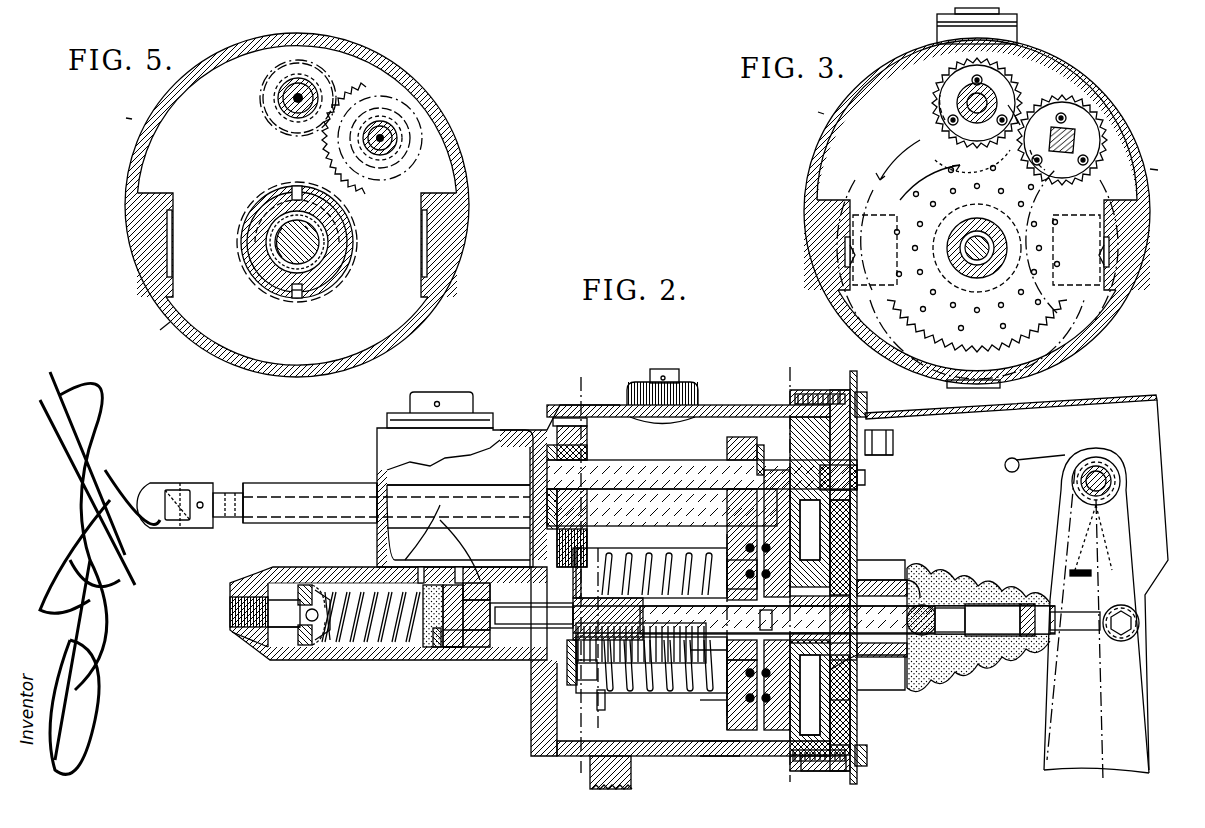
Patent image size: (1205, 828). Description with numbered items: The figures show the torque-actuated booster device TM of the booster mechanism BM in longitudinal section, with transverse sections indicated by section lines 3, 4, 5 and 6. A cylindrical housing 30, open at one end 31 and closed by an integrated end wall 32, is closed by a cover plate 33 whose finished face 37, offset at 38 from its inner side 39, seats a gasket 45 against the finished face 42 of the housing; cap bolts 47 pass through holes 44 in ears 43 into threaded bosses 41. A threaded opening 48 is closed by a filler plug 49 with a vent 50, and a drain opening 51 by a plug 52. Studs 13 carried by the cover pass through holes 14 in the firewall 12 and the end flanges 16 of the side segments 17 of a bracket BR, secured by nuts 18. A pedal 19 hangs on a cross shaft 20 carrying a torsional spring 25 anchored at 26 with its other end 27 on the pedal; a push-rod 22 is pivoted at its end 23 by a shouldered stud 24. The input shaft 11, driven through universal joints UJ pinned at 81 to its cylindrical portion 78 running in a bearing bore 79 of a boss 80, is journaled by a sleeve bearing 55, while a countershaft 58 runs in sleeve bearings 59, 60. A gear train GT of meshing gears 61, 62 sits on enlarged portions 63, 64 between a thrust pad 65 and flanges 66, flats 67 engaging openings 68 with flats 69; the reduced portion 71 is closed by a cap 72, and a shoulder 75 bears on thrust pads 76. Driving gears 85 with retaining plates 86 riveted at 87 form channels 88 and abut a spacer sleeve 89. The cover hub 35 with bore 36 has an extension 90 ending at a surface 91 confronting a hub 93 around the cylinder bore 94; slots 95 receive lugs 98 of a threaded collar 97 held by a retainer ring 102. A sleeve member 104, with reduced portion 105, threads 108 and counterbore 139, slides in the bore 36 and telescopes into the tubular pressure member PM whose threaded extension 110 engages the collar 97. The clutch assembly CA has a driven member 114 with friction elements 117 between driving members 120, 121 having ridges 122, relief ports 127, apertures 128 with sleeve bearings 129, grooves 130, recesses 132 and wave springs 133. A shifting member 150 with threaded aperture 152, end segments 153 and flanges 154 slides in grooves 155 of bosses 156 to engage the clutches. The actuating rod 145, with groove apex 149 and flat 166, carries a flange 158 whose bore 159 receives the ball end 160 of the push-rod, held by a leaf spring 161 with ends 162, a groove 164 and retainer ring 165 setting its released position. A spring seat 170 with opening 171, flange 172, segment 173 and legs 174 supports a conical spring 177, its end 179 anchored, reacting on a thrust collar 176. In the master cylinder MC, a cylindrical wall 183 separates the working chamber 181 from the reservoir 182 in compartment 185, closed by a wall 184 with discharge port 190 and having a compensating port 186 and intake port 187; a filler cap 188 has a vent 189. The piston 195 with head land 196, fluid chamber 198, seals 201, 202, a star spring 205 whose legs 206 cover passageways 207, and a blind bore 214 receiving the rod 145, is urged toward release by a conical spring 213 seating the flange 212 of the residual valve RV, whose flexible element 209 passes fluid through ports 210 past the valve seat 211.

In FIG. 2, the section line 3 is at (783, 373).
In FIG. 2, the section line 4- 4 is at (720, 539).
In FIG. 2, the section line 5 is at (574, 380).
In FIG. 2, the section line 6- 6 is at (598, 552).
In FIG. 5, the input shaft 11 is at (390, 132).
In FIG. 3, the input shaft 11 is at (1075, 135).
In FIG. 2, the input shaft 11 is at (467, 498).
In FIG. 2, the firewall 12 is at (857, 778).
In FIG. 2, the threaded studs 13 is at (893, 444).
In FIG. 2, the holes 14 is at (850, 745).
In FIG. 2, the lateral outturned end flanges 16 is at (850, 700).
In FIG. 2, the side segments 17 is at (1160, 440).
In FIG. 2, the nuts 18 is at (880, 458).
In FIG. 2, the pedal 19 is at (1110, 725).
In FIG. 2, the cross shaft 20 is at (1082, 484).
In FIG. 2, the push-rod 22 is at (1075, 632).
In FIG. 2, the push-rod end 23 is at (1128, 640).
In FIG. 2, the shouldered bolt or stud 24 is at (1138, 612).
In FIG. 2, the torsional-type spring 25 is at (1050, 456).
In FIG. 2, the spring anchor 26 is at (1008, 462).
In FIG. 2, the spring end 27 is at (1068, 570).
In FIG. 5, the housing 30 is at (470, 176).
In FIG. 3, the housing 30 is at (818, 156).
In FIG. 2, the housing 30 is at (716, 404).
In FIG. 2, the open end 31 is at (818, 740).
In FIG. 2, the end wall 32 is at (535, 708).
In FIG. 2, the cover plate 33 is at (835, 726).
In FIG. 2, the hub 35 is at (910, 580).
In FIG. 2, the longitudinal bore 36 is at (895, 672).
In FIG. 2, the circular finished face 37 is at (822, 771).
In FIG. 2, the offset 38 is at (812, 752).
In FIG. 2, the inner side 39 is at (822, 712).
In FIG. 2, the hollow bosses 41 is at (800, 392).
In FIG. 2, the circular finished face 42 is at (825, 392).
In FIG. 2, the embossments or ears 43 is at (850, 392).
In FIG. 2, the holes 44 is at (862, 390).
In FIG. 2, the gasket 45 is at (840, 390).
In FIG. 2, the cap bolts 47 is at (868, 404).
In FIG. 2, the threaded opening 48 is at (665, 417).
In FIG. 3, the filler plug 49 is at (938, 22).
In FIG. 2, the filler plug 49 is at (655, 395).
In FIG. 2, the vent 50 is at (663, 372).
In FIG. 2, the threaded opening 51 is at (620, 745).
In FIG. 2, the plug 52 is at (630, 775).
In FIG. 5, the sleeve bearing 55 is at (388, 120).
In FIG. 5, the countershaft 58 is at (283, 102).
In FIG. 3, the countershaft 58 is at (940, 122).
In FIG. 2, the countershaft 58 is at (630, 460).
In FIG. 5, the sleeve bearing 59 is at (290, 108).
In FIG. 2, the sleeve bearing 59 is at (560, 450).
In FIG. 2, the sleeve bearing 60 is at (852, 497).
In FIG. 5, the gear 61 is at (375, 103).
In FIG. 3, the gear 61 is at (1108, 132).
In FIG. 2, the gear 61 is at (565, 540).
In FIG. 5, the gear 62 is at (263, 84).
In FIG. 3, the gear 62 is at (1020, 75).
In FIG. 2, the gear 62 is at (575, 440).
In FIG. 5, the enlarged diameter portion 63 is at (410, 158).
In FIG. 2, the enlarged diameter portion 64 is at (587, 452).
In FIG. 2, the thrust pad 65 is at (555, 476).
In FIG. 2, the circular flange 66 is at (590, 428).
In FIG. 5, the flats 67 is at (312, 84).
In FIG. 2, the flats 67 is at (558, 466).
In FIG. 5, the openings 68 is at (296, 112).
In FIG. 3, the openings 68 is at (957, 108).
In FIG. 5, the flats 69 is at (282, 94).
In FIG. 2, the reduced diameter cylindrical portion 71 is at (866, 478).
In FIG. 2, the pressfitted cap 72 is at (858, 474).
In FIG. 2, the shoulder 75 is at (820, 460).
In FIG. 2, the thrust pads 76 is at (805, 560).
In FIG. 2, the elongated cylindrical portion 78 is at (312, 483).
In FIG. 2, the bearing bore 79 is at (262, 493).
In FIG. 2, the boss 80 is at (248, 485).
In FIG. 2, the pinning 81 is at (228, 493).
In FIG. 3, the driving gear 85 is at (1040, 120).
In FIG. 2, the driving gear 85 is at (727, 450).
In FIG. 3, the retaining plate 86 is at (946, 86).
In FIG. 2, the retaining plate 86 is at (757, 450).
In FIG. 3, the rivets 87 is at (950, 143).
In FIG. 2, the channel 88 is at (739, 446).
In FIG. 3, the spacer sleeve 89 is at (958, 98).
In FIG. 2, the spacer sleeve 89 is at (765, 470).
In FIG. 2, the hub extension 90 is at (857, 670).
In FIG. 2, the finished end surface 91 is at (815, 700).
In FIG. 5, the hub 93 is at (263, 283).
In FIG. 2, the hub 93 is at (565, 645).
In FIG. 5, the cylindrical bore 94 is at (330, 212).
In FIG. 2, the cylindrical bore 94 is at (510, 650).
In FIG. 5, the slots 95 is at (302, 296).
In FIG. 2, the slots 95 is at (576, 665).
In FIG. 5, the internally threaded collar 97 is at (268, 240).
In FIG. 2, the internally threaded collar 97 is at (576, 640).
In FIG. 5, the lugs or ears 98 is at (296, 188).
In FIG. 2, the lugs or ears 98 is at (575, 560).
In FIG. 2, the split expansible retainer ring 102 is at (612, 570).
In FIG. 2, the sleeve member 104 is at (870, 598).
In FIG. 2, the reduced diameter portion 105 is at (697, 665).
In FIG. 2, the externally threaded portion 108 is at (820, 640).
In FIG. 5, the threaded extension 110 is at (270, 234).
In FIG. 2, the threaded extension 110 is at (652, 575).
In FIG. 2, the driven member 114 is at (720, 741).
In FIG. 2, the friction element 117 is at (775, 548).
In FIG. 3, the driving member 120 is at (1020, 352).
In FIG. 2, the driving member 120 is at (760, 700).
In FIG. 3, the driving member 121 is at (1050, 340).
In FIG. 2, the driving member 121 is at (727, 728).
In FIG. 2, the friction ridge 122 is at (745, 690).
In FIG. 3, the relief ports 127 is at (985, 310).
In FIG. 2, the relief ports 127 is at (700, 708).
In FIG. 3, the circular apertures 128 is at (1000, 270).
In FIG. 3, the sleeve bearing 129 is at (960, 258).
In FIG. 2, the external annular groove 130 is at (775, 574).
In FIG. 3, the circular recess 132 is at (955, 302).
In FIG. 3, the wave-type spring 133 is at (966, 222).
In FIG. 2, the wave-type spring 133 is at (722, 665).
In FIG. 2, the counterbore 139 is at (880, 560).
In FIG. 5, the actuating rod 145 is at (312, 250).
In FIG. 3, the actuating rod 145 is at (968, 260).
In FIG. 2, the actuating rod 145 is at (790, 622).
In FIG. 2, the apex 149 is at (770, 630).
In FIG. 3, the shifting member 150 is at (1094, 286).
In FIG. 2, the shifting member 150 is at (850, 555).
In FIG. 2, the threaded aperture 152 is at (855, 685).
In FIG. 3, the end segments 153 is at (845, 232).
In FIG. 3, the inturned legs or flanges 154 is at (866, 222).
In FIG. 2, the inturned legs or flanges 154 is at (728, 580).
In FIG. 5, the flat bottom grooves 155 is at (172, 213).
In FIG. 3, the flat bottom grooves 155 is at (838, 292).
In FIG. 5, the elongated bosses 156 is at (160, 196).
In FIG. 3, the elongated bosses 156 is at (820, 204).
In FIG. 2, the collar or flange 158 is at (930, 606).
In FIG. 2, the blind internal bore 159 is at (960, 608).
In FIG. 2, the ball end 160 is at (935, 590).
In FIG. 2, the loop-type leaf spring 161 is at (945, 675).
In FIG. 2, the spring ends 162 is at (960, 650).
In FIG. 2, the internal annular groove 164 is at (970, 582).
In FIG. 2, the split expansible retainer ring 165 is at (980, 575).
In FIG. 2, the flat 166 is at (640, 650).
In FIG. 5, the spring seat 170 is at (267, 191).
In FIG. 2, the spring seat 170 is at (640, 556).
In FIG. 5, the central opening 171 is at (340, 224).
In FIG. 2, the outturned flange 172 is at (642, 690).
In FIG. 2, the circular segment 173 is at (648, 552).
In FIG. 2, the legs 174 is at (590, 672).
In FIG. 2, the thrust collar 176 is at (692, 590).
In FIG. 2, the conical spring 177 is at (684, 688).
In FIG. 2, the spring end 179 is at (604, 695).
In FIG. 2, the pressure-working chamber 181 is at (355, 665).
In FIG. 2, the fluid supply 182 is at (385, 458).
In FIG. 2, the cylindrical wall 183 is at (445, 523).
In FIG. 2, the end wall 184 is at (275, 648).
In FIG. 2, the hollow compartment 185 is at (440, 516).
In FIG. 2, the compensating port 186 is at (422, 585).
In FIG. 2, the intake port 187 is at (458, 575).
In FIG. 2, the filler cap 188 is at (388, 416).
In FIG. 2, the vent passageway 189 is at (435, 404).
In FIG. 2, the discharge port 190 is at (232, 608).
In FIG. 2, the piston 195 is at (470, 652).
In FIG. 2, the head land 196 is at (447, 655).
In FIG. 2, the fluid chamber 198 is at (458, 660).
In FIG. 2, the cup-shaped pliant seal 201 is at (440, 652).
In FIG. 2, the ring-like pliant seal 202 is at (490, 595).
In FIG. 2, the star-shaped leaf spring 205 is at (428, 650).
In FIG. 2, the legs 206 is at (443, 585).
In FIG. 2, the passageways 207 is at (467, 583).
In FIG. 2, the flexible element 209 is at (332, 588).
In FIG. 2, the ports 210 is at (325, 650).
In FIG. 2, the valve seat 211 is at (312, 588).
In FIG. 2, the annular flange 212 is at (300, 650).
In FIG. 2, the helical spring 213 is at (376, 648).
In FIG. 2, the blind longitudinal bore 214 is at (487, 650).
In FIG. 5, the booster mechanism BM is at (188, 304).
In FIG. 3, the booster mechanism BM is at (1137, 172).
In FIG. 2, the booster mechanism BM is at (749, 383).
In FIG. 2, the bracket BR is at (1147, 392).
In FIG. 2, the friction clutch assembly CA is at (720, 776).
In FIG. 2, the gear train GT is at (553, 406).
In FIG. 2, the master cylinder MC is at (338, 679).
In FIG. 5, the pressure-transmitting tubular member PM is at (330, 238).
In FIG. 2, the pressure-transmitting tubular member PM is at (632, 665).
In FIG. 2, the residual pressure check-valve RV is at (325, 580).
In FIG. 5, the torque-transmitting mechanism TM is at (139, 113).
In FIG. 3, the torque-transmitting mechanism TM is at (830, 112).
In FIG. 2, the torque-transmitting mechanism TM is at (582, 365).
In FIG. 2, the universal joint UJ is at (190, 485).